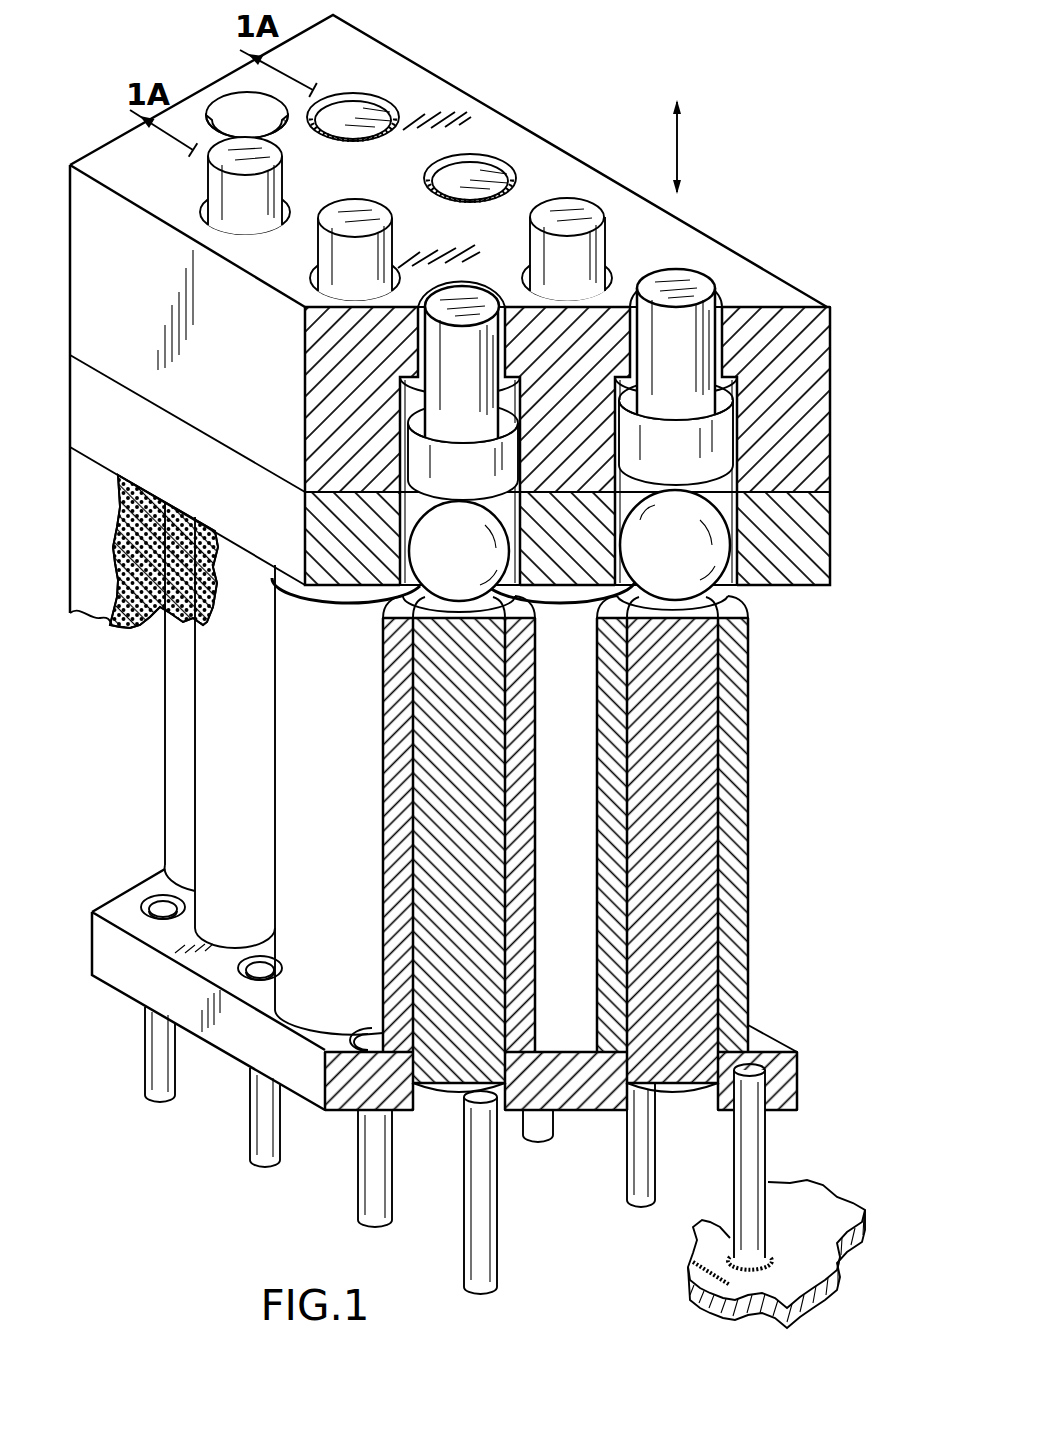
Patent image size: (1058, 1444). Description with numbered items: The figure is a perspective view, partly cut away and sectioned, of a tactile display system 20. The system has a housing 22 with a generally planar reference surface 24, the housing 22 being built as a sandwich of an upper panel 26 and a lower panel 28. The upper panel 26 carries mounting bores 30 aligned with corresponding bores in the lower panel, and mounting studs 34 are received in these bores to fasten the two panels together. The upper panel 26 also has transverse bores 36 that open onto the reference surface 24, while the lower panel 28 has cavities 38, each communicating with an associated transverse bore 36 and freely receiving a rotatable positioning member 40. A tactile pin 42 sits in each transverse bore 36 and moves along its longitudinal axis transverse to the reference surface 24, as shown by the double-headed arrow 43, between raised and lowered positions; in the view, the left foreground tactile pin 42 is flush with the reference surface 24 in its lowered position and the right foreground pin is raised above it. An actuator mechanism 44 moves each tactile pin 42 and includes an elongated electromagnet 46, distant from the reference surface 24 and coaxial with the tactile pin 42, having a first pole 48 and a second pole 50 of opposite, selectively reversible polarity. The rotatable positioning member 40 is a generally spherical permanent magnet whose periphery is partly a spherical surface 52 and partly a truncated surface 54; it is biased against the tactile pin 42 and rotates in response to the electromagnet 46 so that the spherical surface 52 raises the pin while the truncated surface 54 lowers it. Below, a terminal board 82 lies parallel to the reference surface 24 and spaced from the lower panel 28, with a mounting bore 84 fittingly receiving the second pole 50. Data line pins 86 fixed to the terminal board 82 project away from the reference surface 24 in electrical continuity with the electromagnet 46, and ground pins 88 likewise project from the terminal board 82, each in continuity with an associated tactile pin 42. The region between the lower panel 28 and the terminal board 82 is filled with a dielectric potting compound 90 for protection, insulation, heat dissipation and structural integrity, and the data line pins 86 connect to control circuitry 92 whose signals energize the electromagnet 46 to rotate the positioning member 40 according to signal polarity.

The tactile display system 20 is at (760, 183).
The housing 22 is at (858, 377).
The reference surface 24 is at (545, 172).
The upper panel 26 is at (808, 337).
The lower panel 28 is at (803, 553).
The mounting bores 30 is at (225, 112).
The mounting studs 34 is at (247, 125).
The transverse bores 36 is at (408, 406).
The cavities 38 is at (385, 521).
The rotatable positioning member 40 is at (402, 603).
The tactile pin 42 is at (747, 305).
The double-headed arrow 43 is at (684, 152).
The actuator mechanism 44 is at (780, 790).
The electromagnet 46 is at (738, 706).
The first pole 48 is at (748, 627).
The second pole 50 is at (455, 1087).
The spherical surface 52 is at (445, 567).
The truncated surface 54 is at (378, 540).
The terminal board 82 is at (120, 964).
The mounting bore 84 is at (636, 1087).
The data line pins 86 is at (480, 1250).
The ground pins 88 is at (160, 1088).
The dielectric potting compound 90 is at (131, 626).
The circuitry 92 is at (840, 1271).